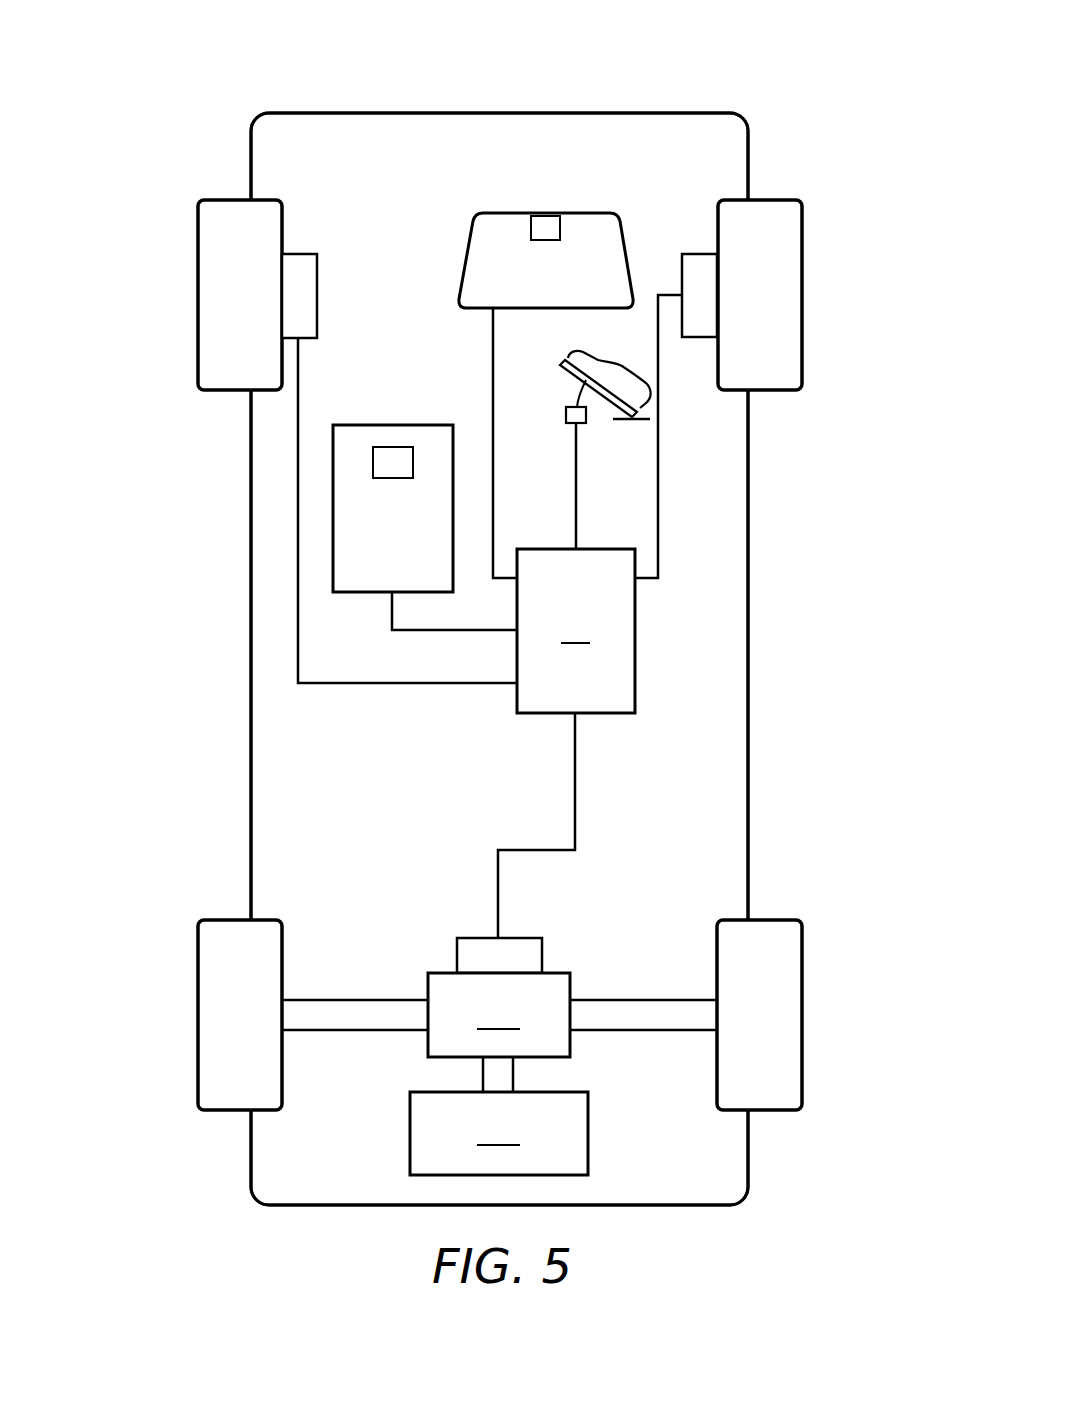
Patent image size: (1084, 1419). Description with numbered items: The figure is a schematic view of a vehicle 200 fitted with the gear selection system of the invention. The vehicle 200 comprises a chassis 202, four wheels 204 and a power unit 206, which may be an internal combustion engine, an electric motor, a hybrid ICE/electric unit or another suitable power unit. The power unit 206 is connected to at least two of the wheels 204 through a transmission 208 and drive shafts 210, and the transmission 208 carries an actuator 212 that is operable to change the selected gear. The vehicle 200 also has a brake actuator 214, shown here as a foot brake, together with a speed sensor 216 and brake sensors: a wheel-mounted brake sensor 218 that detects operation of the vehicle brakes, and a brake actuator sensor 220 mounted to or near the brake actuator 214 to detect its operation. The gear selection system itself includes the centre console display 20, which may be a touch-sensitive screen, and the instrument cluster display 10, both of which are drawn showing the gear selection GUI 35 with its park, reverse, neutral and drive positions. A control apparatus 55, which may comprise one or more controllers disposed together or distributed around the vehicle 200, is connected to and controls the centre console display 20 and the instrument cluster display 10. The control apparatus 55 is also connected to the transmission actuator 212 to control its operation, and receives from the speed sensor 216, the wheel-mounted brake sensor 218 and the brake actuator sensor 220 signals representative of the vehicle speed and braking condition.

The vehicle 200 is at (717, 74).
The chassis 202 is at (749, 687).
The wheels 204 is at (198, 229).
The power unit 206 is at (499, 1133).
The transmission 208 is at (499, 1032).
The drive shafts 210 is at (352, 1000).
The actuator 212 is at (470, 938).
The brake actuator 214 is at (572, 370).
The speed sensor 216 is at (305, 254).
The wheel-mounted brake sensor 218 is at (690, 254).
The brake actuator sensor 220 is at (572, 425).
The instrument cluster display 10 is at (500, 213).
The centre console display 20 is at (428, 425).
The gear selection GUI 35 is at (562, 247).
The control apparatus 55 is at (566, 743).